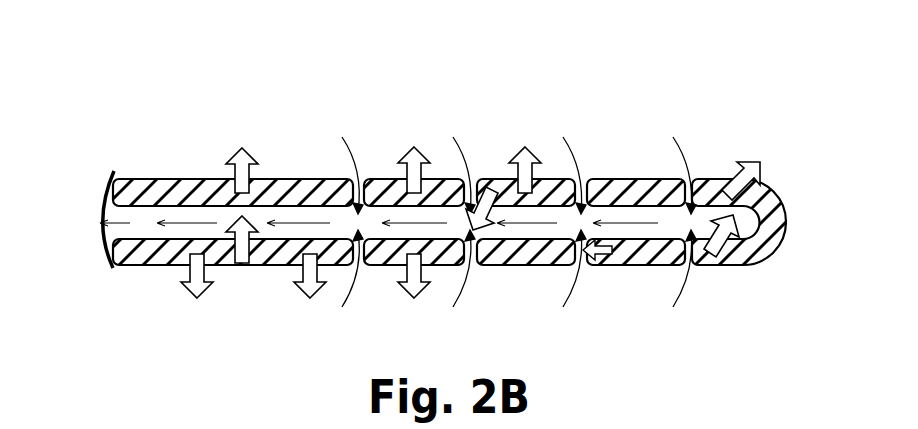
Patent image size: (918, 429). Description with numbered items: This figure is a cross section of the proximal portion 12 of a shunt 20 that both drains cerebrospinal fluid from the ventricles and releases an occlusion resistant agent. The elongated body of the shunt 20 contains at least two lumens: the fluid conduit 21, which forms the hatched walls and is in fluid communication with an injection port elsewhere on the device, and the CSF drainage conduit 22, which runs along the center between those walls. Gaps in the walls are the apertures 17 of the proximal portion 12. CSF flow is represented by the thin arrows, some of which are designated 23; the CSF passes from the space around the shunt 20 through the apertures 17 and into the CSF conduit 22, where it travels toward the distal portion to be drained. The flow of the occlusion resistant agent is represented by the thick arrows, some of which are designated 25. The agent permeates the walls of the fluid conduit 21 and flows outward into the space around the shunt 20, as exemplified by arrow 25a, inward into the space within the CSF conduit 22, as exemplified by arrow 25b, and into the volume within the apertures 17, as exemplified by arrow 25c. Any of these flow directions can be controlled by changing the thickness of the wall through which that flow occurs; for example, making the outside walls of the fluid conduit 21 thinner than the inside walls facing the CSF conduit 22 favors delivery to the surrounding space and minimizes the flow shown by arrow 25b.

The shunt 20 is at (397, 104).
The fluid conduit 21 is at (162, 192).
The CSF drainage conduit 22 is at (197, 224).
The CSF flow arrows 23 is at (578, 158).
The occlusion resistant agent flow arrows 25 is at (423, 150).
The arrow to space around shunt 25a is at (243, 148).
The arrow to CSF conduit 25b is at (727, 240).
The arrow to aperture volume 25c is at (601, 264).
The apertures 17 is at (467, 262).
The proximal portion 12 is at (763, 237).